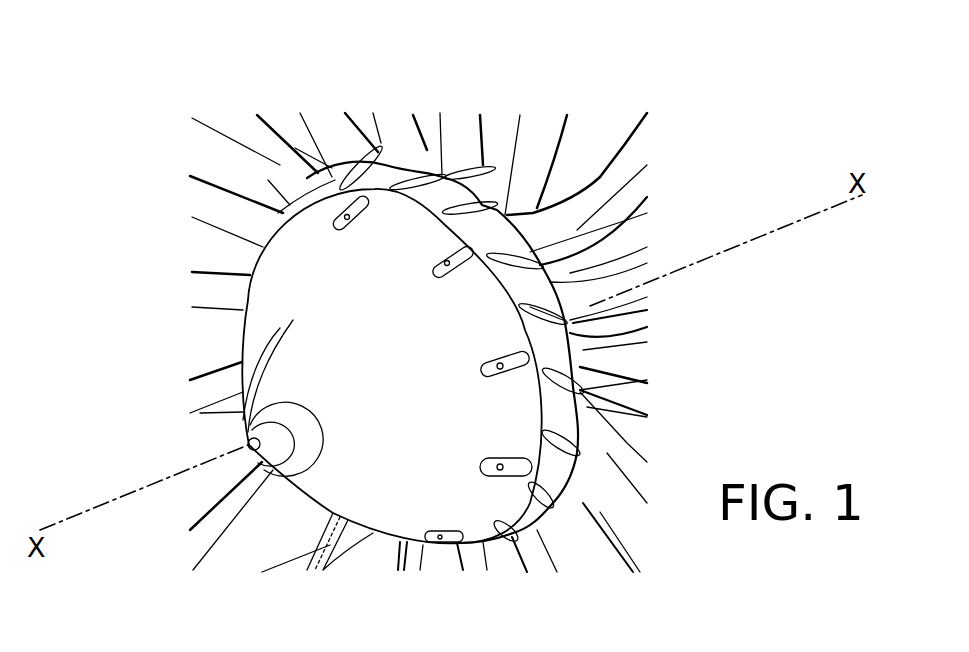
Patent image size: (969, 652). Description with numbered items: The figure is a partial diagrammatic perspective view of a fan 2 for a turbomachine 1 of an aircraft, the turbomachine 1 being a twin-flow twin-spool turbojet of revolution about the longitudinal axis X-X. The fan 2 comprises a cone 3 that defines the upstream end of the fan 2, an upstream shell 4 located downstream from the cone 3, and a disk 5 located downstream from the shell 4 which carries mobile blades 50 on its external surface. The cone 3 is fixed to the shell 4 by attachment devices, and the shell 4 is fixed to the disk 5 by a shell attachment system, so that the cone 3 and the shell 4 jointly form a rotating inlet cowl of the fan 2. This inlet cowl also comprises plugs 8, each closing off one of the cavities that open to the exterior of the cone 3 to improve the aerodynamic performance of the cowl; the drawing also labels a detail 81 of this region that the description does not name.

The turbomachine 1 is at (672, 102).
The fan 2 is at (663, 183).
The cone 3 is at (278, 288).
The upstream shell 4 is at (432, 205).
The disk 5 is at (583, 482).
The plugs 8 is at (520, 363).
The platform lateral edge 81 is at (515, 372).
The mobile blades 50 is at (280, 164).